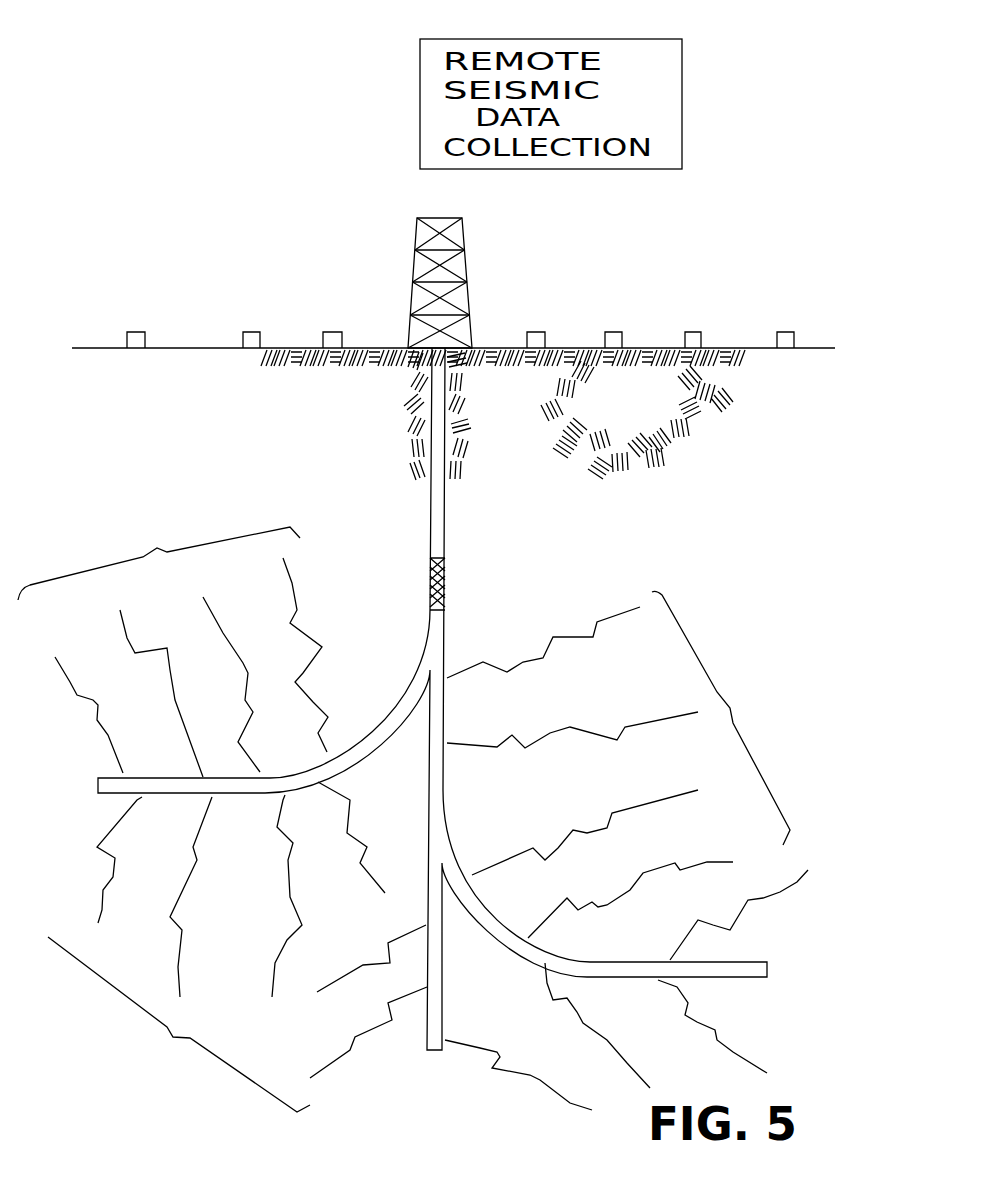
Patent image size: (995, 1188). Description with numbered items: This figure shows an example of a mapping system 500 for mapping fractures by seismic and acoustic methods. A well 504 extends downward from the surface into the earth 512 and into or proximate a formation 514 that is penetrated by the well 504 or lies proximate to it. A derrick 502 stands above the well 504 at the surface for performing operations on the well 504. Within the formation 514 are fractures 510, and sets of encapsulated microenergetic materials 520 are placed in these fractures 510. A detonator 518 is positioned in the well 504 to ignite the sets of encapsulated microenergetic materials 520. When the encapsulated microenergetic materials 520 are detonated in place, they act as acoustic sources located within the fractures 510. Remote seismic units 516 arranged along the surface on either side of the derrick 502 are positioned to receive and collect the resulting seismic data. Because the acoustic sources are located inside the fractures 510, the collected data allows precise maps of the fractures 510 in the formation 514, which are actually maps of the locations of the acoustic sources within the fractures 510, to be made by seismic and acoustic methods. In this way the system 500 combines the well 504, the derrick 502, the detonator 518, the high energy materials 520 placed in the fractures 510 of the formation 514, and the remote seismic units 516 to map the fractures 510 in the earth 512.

The mapping system 500 is at (257, 178).
The derrick 502 is at (492, 283).
The well 504 is at (432, 699).
The fractures 510 is at (435, 672).
The earth 512 is at (666, 419).
The formation 514 is at (270, 879).
The remote seismic units 516 is at (460, 306).
The detonator 518 is at (490, 584).
The encapsulated microenergetic materials 520 is at (179, 1024).